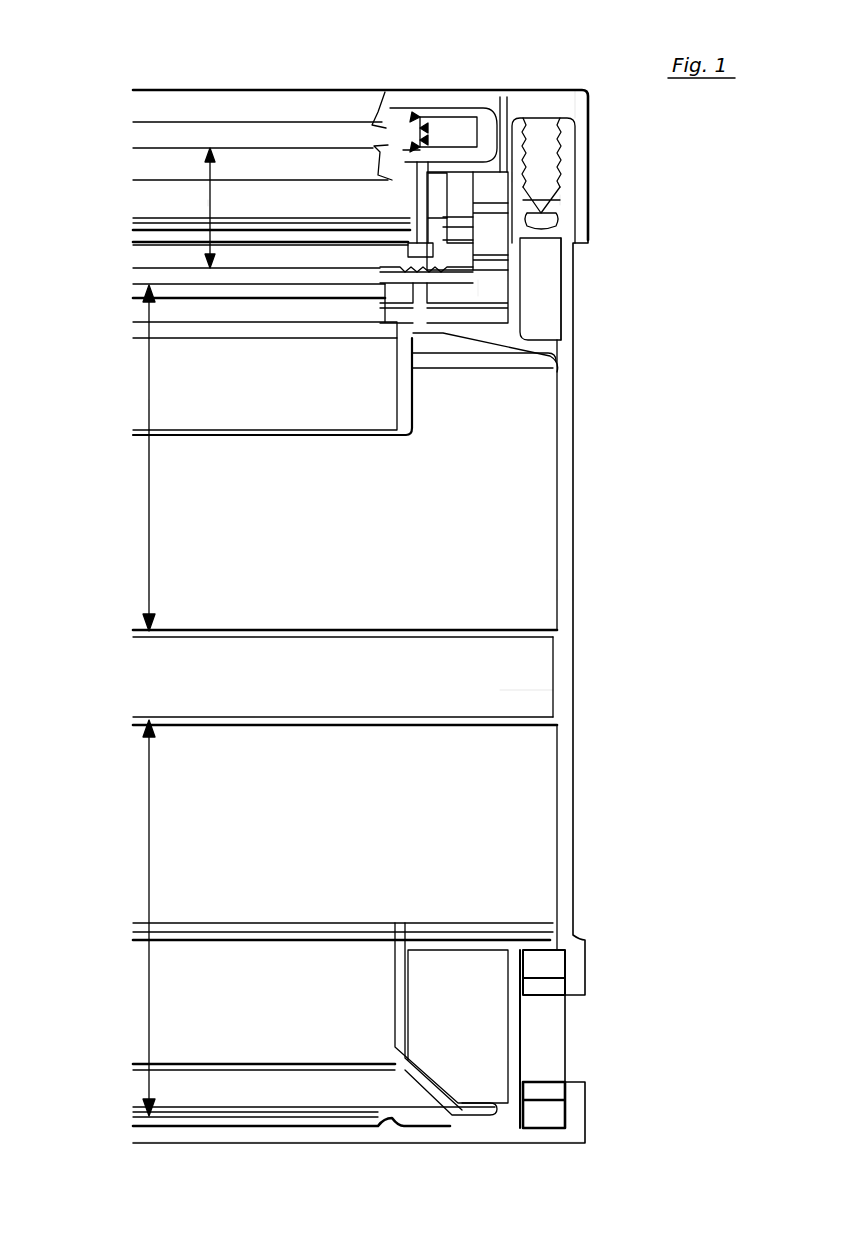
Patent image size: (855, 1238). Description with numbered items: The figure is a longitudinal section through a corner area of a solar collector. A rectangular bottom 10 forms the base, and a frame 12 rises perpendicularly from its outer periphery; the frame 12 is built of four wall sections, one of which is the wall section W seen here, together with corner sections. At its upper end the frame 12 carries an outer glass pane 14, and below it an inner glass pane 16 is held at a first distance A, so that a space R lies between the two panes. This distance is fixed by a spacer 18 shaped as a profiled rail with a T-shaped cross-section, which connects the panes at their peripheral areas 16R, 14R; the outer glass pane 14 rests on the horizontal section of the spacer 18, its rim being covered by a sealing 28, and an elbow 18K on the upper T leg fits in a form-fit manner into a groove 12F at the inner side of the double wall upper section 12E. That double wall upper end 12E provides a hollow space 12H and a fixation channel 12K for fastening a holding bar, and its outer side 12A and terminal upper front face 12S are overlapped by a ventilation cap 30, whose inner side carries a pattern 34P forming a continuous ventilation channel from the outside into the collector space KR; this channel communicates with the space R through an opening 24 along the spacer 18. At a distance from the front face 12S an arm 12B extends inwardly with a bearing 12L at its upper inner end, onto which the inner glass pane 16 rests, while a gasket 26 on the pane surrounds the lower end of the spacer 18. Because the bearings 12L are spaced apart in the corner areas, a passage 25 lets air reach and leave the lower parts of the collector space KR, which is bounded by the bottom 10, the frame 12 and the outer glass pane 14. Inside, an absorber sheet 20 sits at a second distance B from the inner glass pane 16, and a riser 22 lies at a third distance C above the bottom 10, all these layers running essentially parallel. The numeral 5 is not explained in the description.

The bottom 10 is at (293, 1143).
The frame 12 is at (568, 818).
The outer side of the frame 12A is at (580, 858).
The arm 12B is at (500, 384).
The upper end of the frame 12E is at (568, 203).
The groove 12F is at (513, 179).
The hollow space 12H is at (545, 300).
The fixation channel 12K is at (556, 117).
The bearing 12L is at (410, 318).
The terminal upper front face of the frame 12S is at (526, 100).
The outer glass pane 14 is at (320, 132).
The peripheral area of the outer glass pane 14R is at (433, 132).
The inner glass pane 16 is at (178, 273).
The peripheral area of the inner glass pane 16R is at (432, 278).
The spacer 18 is at (420, 193).
The elbow 18K is at (512, 166).
The absorber sheet 20 is at (497, 632).
The riser 22 is at (498, 690).
The opening 24 is at (480, 190).
The passage 25 is at (490, 289).
The gasket 26 is at (408, 258).
The sealing 28 is at (466, 112).
The ventilation cap 30 is at (573, 104).
The pattern 34P is at (502, 127).
The step 5 is at (577, 244).
The first distance A is at (208, 203).
The second distance B is at (148, 530).
The third distance C is at (148, 850).
The space R is at (231, 208).
The collector space KR is at (180, 500).
The wall section W is at (560, 594).